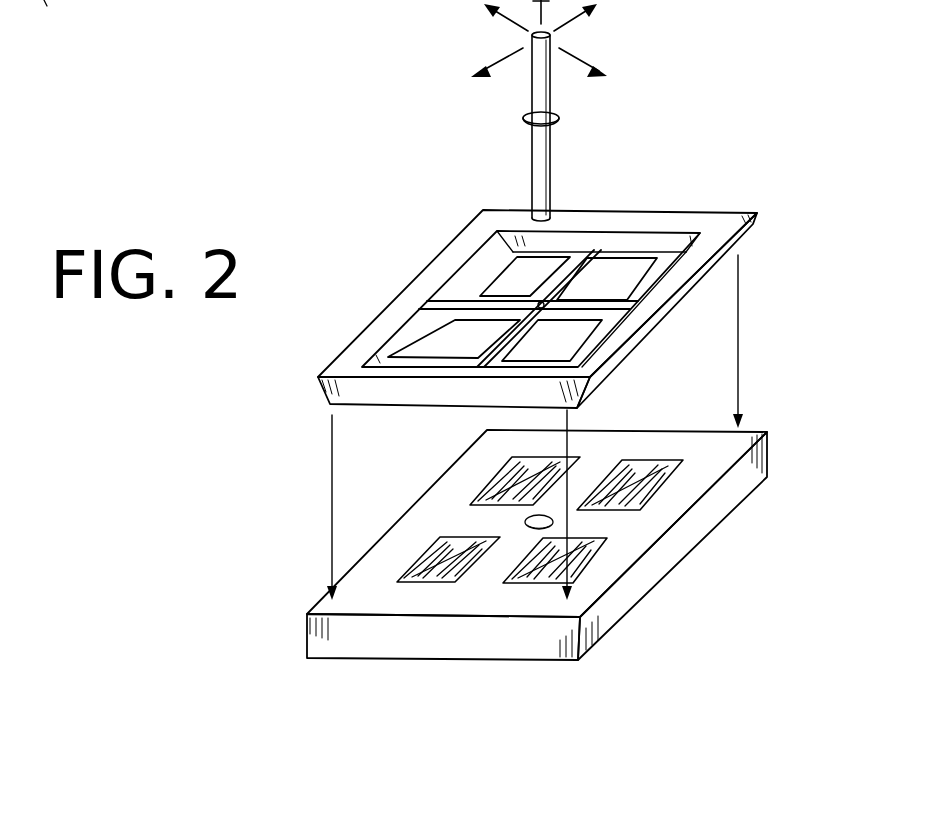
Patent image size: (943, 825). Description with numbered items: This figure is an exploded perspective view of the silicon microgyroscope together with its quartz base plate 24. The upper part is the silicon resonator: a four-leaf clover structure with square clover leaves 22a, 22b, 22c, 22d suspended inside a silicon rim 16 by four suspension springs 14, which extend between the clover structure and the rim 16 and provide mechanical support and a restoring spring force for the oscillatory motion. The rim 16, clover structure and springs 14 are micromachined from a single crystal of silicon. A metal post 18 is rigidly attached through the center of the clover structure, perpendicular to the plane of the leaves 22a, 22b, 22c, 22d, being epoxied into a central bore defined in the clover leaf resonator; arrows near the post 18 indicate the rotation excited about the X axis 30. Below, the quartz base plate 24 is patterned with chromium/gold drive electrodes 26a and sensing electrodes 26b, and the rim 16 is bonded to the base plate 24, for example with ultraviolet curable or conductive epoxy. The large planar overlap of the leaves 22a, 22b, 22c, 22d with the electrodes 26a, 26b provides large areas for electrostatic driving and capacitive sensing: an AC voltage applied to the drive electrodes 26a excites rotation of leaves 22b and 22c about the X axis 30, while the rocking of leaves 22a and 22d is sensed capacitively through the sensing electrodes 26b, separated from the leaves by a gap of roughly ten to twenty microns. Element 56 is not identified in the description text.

The suspension springs 14 is at (548, 300).
The rim 16 is at (757, 213).
The metal post 18 is at (553, 97).
The clover leaf 22a is at (453, 345).
The clover leaf 22b is at (567, 340).
The clover leaf 22c is at (640, 260).
The clover leaf 22d is at (507, 287).
The quartz base plate 24 is at (770, 446).
The drive electrodes 26a is at (453, 573).
The sensing electrodes 26b is at (592, 550).
The X axis 30 is at (102, 0).
The center pivot 56 is at (544, 311).